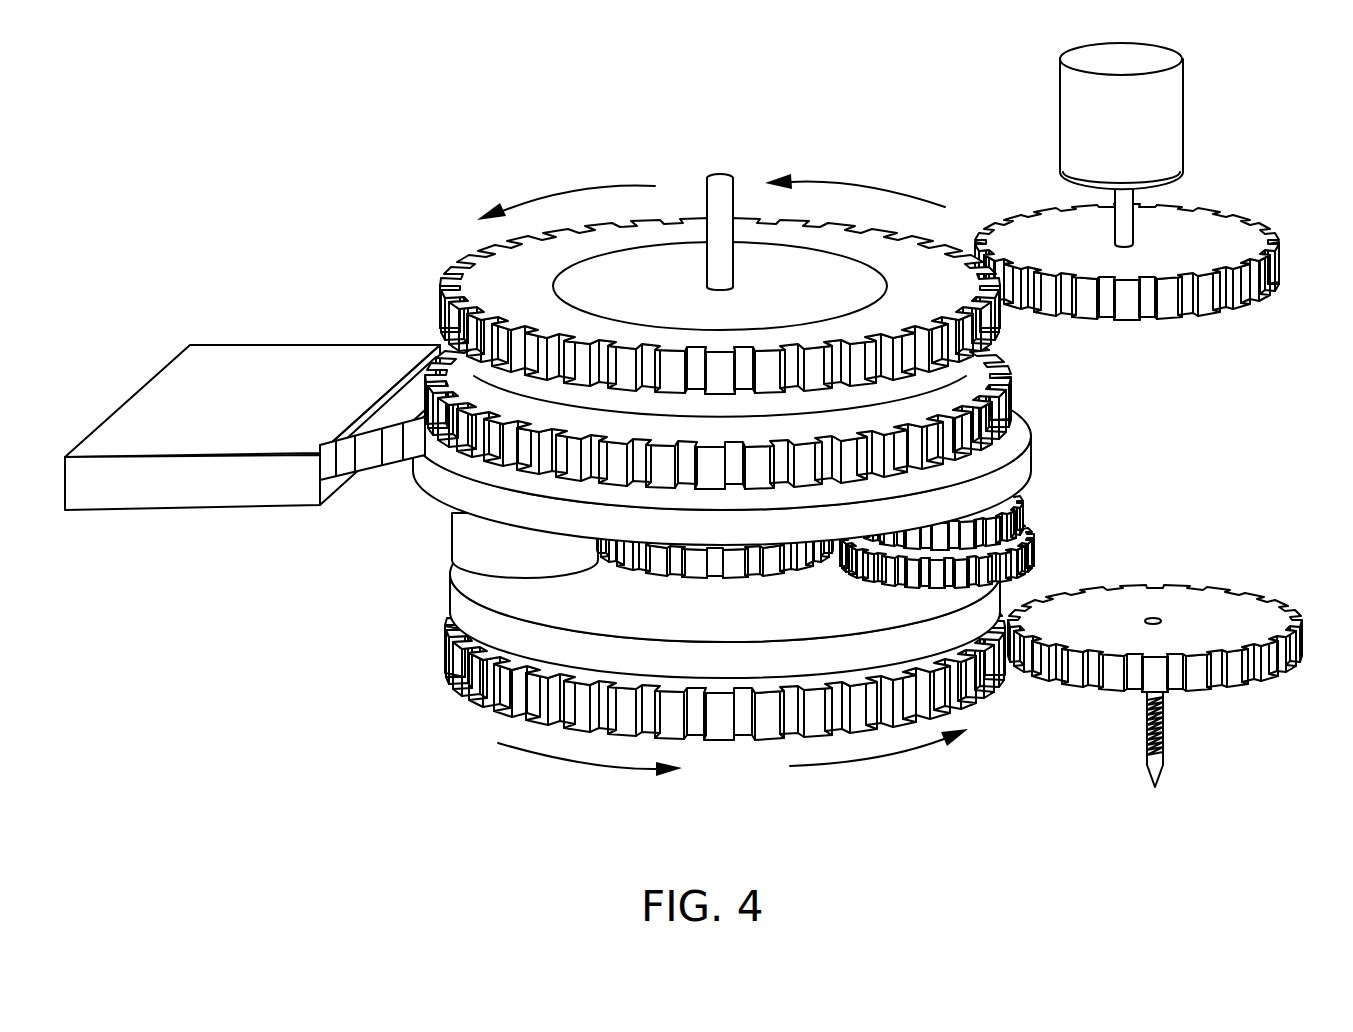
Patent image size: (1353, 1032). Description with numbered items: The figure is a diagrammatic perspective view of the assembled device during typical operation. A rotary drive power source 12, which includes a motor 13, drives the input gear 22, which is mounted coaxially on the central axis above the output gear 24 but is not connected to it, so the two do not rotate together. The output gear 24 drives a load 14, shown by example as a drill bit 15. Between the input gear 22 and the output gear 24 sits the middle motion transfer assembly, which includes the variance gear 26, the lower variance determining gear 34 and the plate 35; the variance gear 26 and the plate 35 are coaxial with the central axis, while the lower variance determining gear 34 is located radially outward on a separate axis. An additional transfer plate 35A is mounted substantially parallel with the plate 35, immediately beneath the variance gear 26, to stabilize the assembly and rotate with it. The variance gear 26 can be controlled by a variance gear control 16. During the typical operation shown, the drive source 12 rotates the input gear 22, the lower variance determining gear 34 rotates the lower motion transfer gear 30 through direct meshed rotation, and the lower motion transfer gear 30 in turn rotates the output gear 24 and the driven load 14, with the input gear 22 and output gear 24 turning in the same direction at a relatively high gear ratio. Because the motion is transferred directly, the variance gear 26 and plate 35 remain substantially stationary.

The rotary drive power source 12 is at (1247, 216).
The motor 13 is at (1183, 111).
The load 14 is at (1297, 610).
The drill bit 15 is at (1163, 736).
The variance gear control 16 is at (183, 509).
The input gear 22 is at (445, 282).
The output gear 24 is at (451, 680).
The variance gear 26 is at (1007, 377).
The lower motion transfer gear 30 is at (688, 586).
The lower variance determining gear 34 is at (1036, 549).
The plate 35 is at (449, 598).
The transfer plate 35A is at (1033, 455).